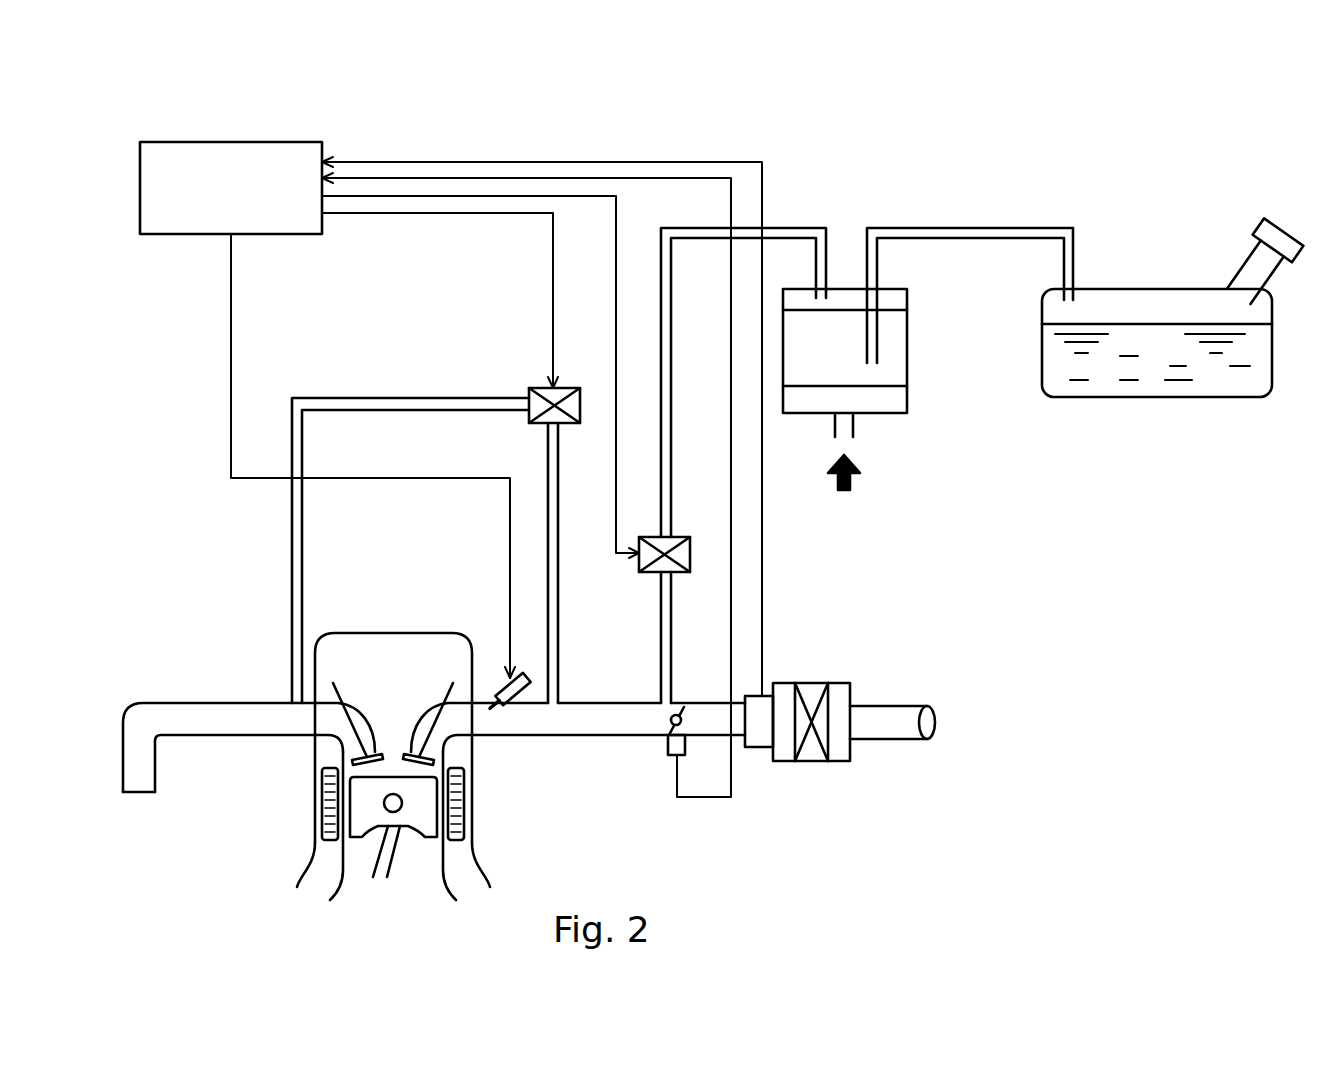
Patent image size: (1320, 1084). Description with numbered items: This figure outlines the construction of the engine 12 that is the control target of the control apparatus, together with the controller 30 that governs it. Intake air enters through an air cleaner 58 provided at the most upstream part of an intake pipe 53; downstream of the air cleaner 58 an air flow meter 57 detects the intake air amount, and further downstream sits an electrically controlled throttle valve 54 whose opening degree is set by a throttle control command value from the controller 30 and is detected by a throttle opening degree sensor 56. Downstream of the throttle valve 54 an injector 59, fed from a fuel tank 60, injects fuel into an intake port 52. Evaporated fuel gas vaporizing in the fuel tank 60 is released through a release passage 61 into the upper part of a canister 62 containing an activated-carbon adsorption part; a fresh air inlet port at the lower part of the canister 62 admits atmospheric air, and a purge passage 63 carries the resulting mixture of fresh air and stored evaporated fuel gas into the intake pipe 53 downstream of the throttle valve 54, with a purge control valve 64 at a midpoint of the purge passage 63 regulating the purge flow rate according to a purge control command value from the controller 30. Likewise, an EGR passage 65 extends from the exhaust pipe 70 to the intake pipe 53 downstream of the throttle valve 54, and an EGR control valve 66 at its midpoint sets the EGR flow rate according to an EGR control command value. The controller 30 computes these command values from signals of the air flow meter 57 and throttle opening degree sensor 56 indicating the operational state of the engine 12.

The engine 12 is at (376, 588).
The controller 30 is at (275, 142).
The intake port 52 is at (457, 725).
The intake pipe 53 is at (577, 737).
The throttle valve 54 is at (668, 730).
The throttle opening degree sensor 56 is at (672, 757).
The air flow meter 57 is at (757, 748).
The air cleaner 58 is at (807, 762).
The injector 59 is at (530, 672).
The fuel tank 60 is at (1146, 398).
The release passage 61 is at (980, 228).
The canister 62 is at (907, 351).
The purge passage 63 is at (800, 228).
The purge control valve 64 is at (645, 572).
The EGR passage 65 is at (405, 398).
The EGR control valve 66 is at (535, 388).
The exhaust pipe 70 is at (188, 702).